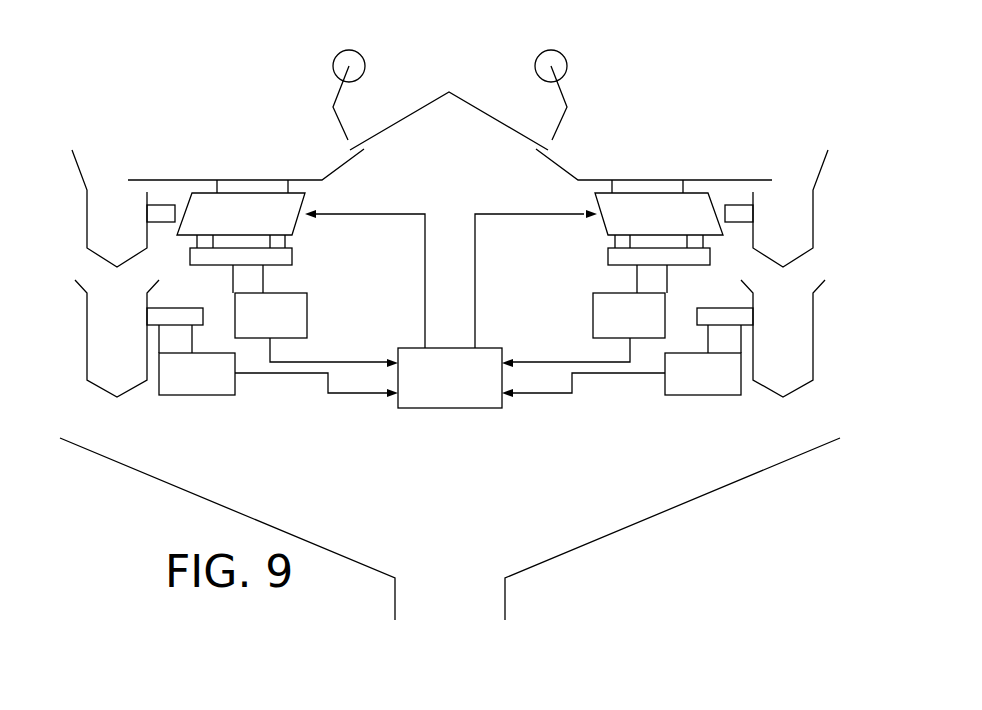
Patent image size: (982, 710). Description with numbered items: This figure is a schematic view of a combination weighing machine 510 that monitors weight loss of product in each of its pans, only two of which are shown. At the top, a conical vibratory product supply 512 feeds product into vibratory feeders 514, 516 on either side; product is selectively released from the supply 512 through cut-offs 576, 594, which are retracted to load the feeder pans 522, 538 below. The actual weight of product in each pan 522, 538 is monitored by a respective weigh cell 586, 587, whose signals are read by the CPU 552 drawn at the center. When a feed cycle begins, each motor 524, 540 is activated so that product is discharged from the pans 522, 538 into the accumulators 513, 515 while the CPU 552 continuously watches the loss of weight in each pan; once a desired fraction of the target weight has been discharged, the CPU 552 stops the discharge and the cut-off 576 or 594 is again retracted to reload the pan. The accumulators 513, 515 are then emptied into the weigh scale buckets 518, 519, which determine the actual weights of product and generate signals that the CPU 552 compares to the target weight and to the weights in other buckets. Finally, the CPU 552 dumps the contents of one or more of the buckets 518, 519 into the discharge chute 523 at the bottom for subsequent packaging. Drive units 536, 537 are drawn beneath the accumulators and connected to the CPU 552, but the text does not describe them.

The combination weighing machine 510 is at (404, 79).
The conical vibratory product supply 512 is at (477, 107).
The cut-off 594 is at (336, 57).
The cut-off 576 is at (596, 58).
The vibratory feeder 516 is at (187, 155).
The vibratory feeder 514 is at (654, 143).
The feeder pan 538 is at (248, 179).
The feeder pan 522 is at (722, 160).
The motor 540 is at (306, 197).
The motor 524 is at (594, 196).
The weigh cell 587 is at (308, 325).
The weigh cell 586 is at (593, 320).
The accumulator 515 is at (85, 220).
The accumulator 513 is at (815, 218).
The weigh scale bucket 519 is at (87, 342).
The weigh scale bucket 518 is at (815, 355).
The left actuator drive 537 is at (213, 395).
The right actuator drive 536 is at (712, 395).
The CPU 552 is at (452, 408).
The discharge chute 523 is at (630, 527).